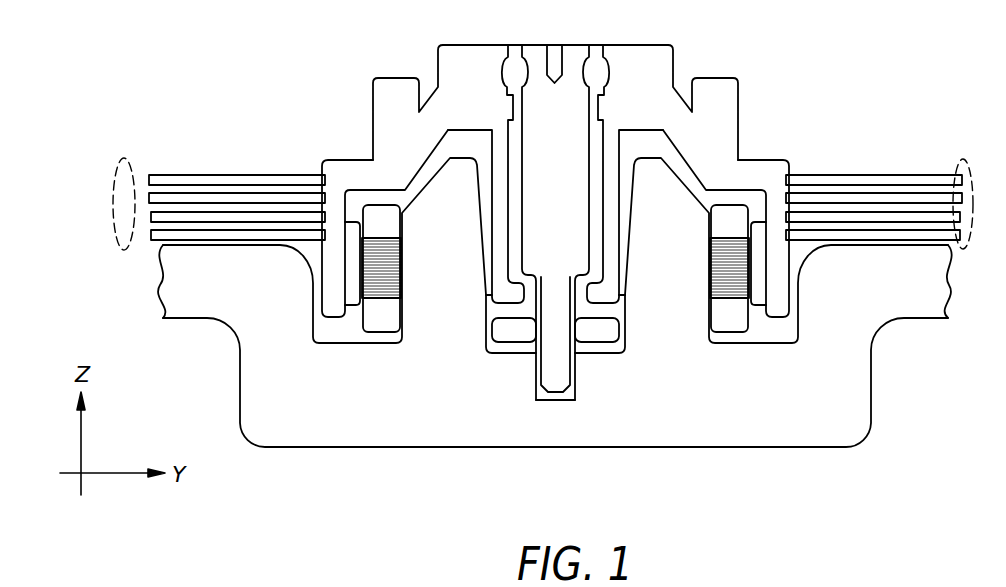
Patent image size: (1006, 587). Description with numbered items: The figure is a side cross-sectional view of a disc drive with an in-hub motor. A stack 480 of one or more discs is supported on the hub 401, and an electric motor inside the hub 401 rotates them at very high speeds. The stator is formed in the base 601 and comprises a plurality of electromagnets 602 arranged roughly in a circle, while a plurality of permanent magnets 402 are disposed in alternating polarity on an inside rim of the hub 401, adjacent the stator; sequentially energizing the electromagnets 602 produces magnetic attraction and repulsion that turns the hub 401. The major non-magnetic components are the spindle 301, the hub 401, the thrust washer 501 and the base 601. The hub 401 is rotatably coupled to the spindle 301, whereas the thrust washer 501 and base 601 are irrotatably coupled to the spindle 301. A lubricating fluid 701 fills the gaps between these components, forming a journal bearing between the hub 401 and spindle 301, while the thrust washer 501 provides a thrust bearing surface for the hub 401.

The spindle 301 is at (573, 52).
The hub 401 is at (470, 53).
The permanent magnets 402 is at (337, 197).
The stack of discs 480 is at (130, 160).
The thrust washer 501 is at (512, 337).
The base 601 is at (912, 308).
The electromagnets 602 is at (373, 330).
The lubricating fluid 701 is at (625, 207).